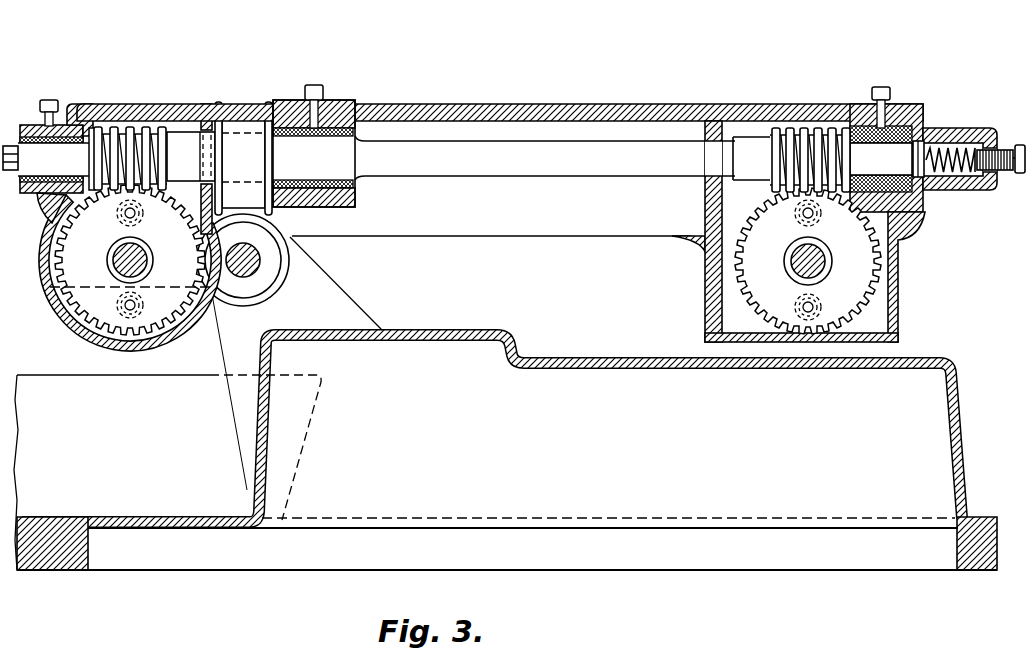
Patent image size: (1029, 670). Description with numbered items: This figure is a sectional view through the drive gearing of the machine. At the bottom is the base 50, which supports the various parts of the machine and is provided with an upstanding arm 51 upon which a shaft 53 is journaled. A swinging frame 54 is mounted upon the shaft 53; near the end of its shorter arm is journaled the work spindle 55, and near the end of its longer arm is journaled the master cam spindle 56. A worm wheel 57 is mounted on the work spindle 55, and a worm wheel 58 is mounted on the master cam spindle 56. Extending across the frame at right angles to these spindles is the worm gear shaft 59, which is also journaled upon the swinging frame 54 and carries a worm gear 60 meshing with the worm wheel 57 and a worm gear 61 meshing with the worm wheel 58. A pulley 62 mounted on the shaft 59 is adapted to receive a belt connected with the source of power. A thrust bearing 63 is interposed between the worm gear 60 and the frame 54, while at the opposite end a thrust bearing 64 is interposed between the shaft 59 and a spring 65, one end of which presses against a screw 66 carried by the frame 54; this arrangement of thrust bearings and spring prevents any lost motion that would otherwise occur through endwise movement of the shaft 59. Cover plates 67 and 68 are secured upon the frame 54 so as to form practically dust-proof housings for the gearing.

The base 50 is at (557, 357).
The upstanding arm 51 is at (328, 307).
The shaft 53 is at (260, 261).
The swinging frame 54 is at (537, 113).
The work spindle 55 is at (127, 257).
The master cam spindle 56 is at (808, 255).
The worm wheel 57 is at (78, 297).
The worm wheel 58 is at (878, 248).
The worm gear shaft 59 is at (522, 168).
The worm gear 60 is at (117, 130).
The worm gear 61 is at (790, 127).
The pulley 62 is at (246, 117).
The thrust bearing 63 is at (85, 140).
The thrust bearing 64 is at (923, 138).
The spring 65 is at (953, 145).
The screw 66 is at (1020, 137).
The cover plate 67 is at (82, 333).
The cover plate 68 is at (898, 337).